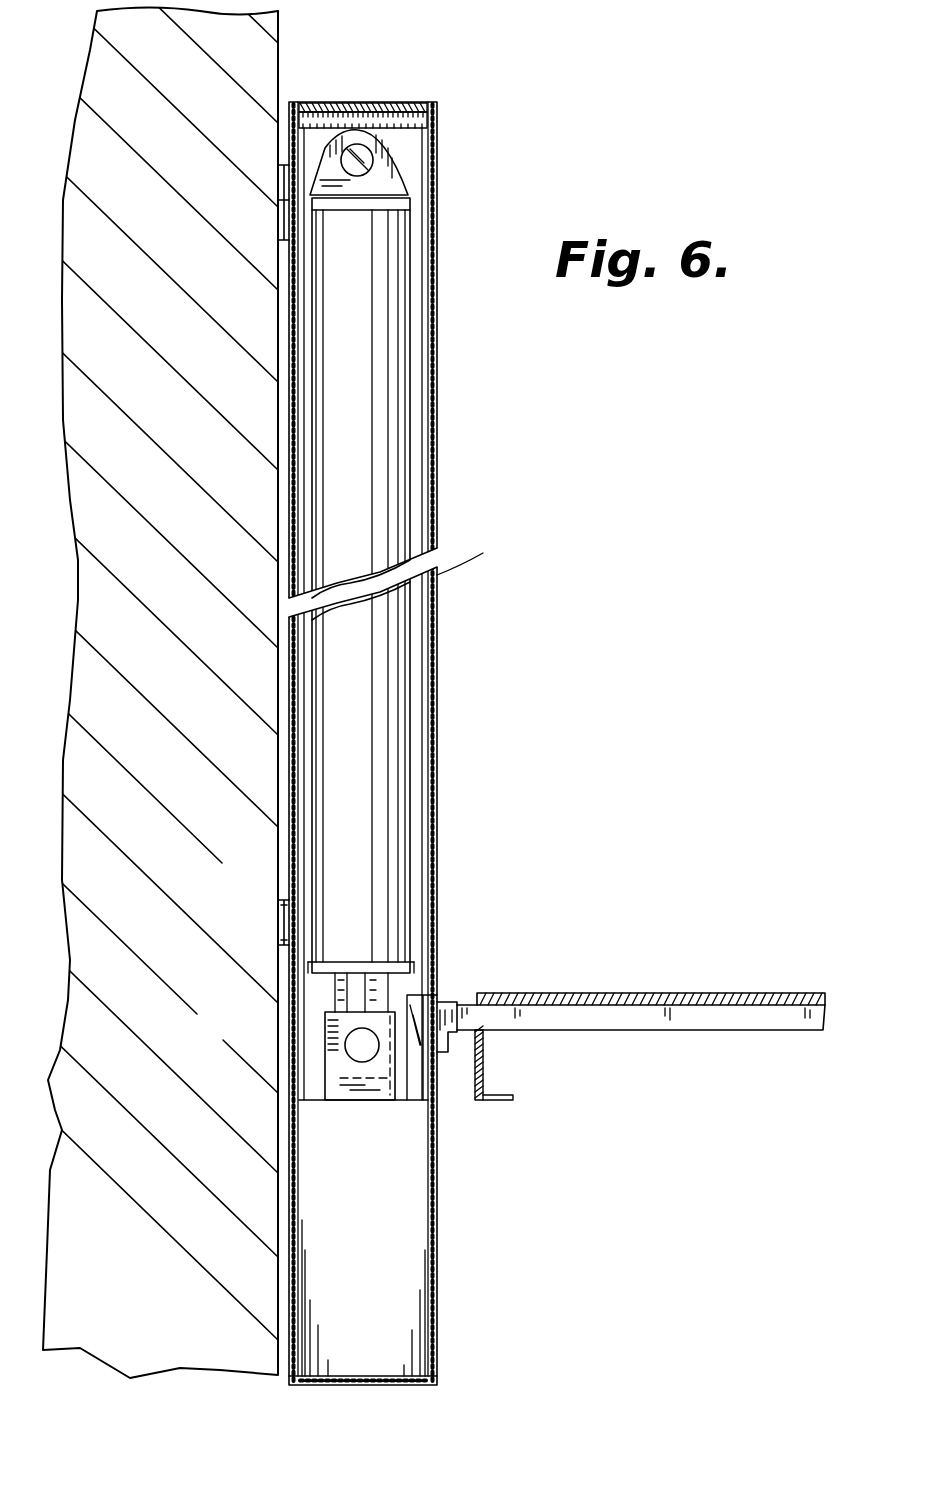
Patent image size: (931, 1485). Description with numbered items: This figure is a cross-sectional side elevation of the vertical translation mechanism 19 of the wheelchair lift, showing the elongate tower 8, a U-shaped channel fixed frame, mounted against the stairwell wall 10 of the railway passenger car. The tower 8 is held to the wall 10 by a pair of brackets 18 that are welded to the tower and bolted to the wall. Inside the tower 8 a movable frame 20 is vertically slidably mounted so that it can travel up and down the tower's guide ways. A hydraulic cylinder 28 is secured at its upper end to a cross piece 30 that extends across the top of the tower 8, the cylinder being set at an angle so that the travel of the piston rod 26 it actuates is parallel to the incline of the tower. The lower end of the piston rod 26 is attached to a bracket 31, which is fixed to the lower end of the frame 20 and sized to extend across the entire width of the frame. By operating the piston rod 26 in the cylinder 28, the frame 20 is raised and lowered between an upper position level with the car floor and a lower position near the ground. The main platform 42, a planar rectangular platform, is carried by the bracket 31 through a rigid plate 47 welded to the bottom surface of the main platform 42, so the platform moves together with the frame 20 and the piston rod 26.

The tower 8 is at (437, 645).
The wall 10 is at (285, 62).
The brackets 18 is at (274, 917).
The vertical translation mechanism 19 is at (345, 102).
The frame 20 is at (477, 556).
The piston rod 26 is at (342, 993).
The hydraulic cylinder 28 is at (378, 782).
The cross piece 30 is at (403, 101).
The bracket 31 is at (425, 1006).
The main platform 42 is at (553, 1003).
The rigid plate 47 is at (600, 1020).